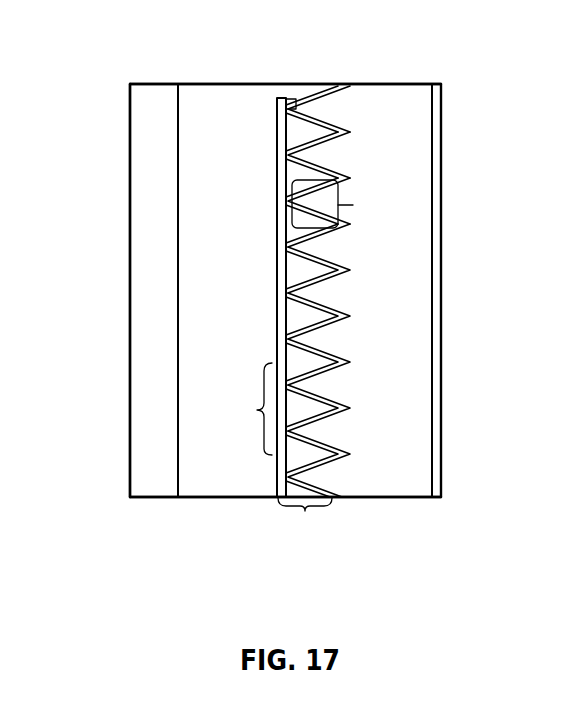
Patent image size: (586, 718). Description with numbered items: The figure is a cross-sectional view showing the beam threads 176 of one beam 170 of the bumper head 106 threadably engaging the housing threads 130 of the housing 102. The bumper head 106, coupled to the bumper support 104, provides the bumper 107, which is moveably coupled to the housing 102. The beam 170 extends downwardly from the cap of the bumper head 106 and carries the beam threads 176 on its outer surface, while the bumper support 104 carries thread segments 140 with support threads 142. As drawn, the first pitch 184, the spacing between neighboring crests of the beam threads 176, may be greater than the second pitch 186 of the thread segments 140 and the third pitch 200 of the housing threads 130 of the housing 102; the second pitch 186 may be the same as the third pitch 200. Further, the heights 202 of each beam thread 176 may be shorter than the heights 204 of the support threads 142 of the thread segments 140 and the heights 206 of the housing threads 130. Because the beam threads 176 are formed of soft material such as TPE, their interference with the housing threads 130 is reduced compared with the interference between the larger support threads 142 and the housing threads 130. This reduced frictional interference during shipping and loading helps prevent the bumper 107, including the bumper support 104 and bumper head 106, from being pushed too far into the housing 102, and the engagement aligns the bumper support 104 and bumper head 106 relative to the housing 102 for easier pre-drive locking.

The housing 102 is at (447, 475).
The bumper support 104 is at (148, 116).
The bumper head 106 is at (237, 486).
The bumper 107 is at (120, 505).
The housing threads 130 is at (322, 105).
The thread segments 140 is at (302, 138).
The support threads 142 is at (290, 225).
The beam 170 is at (200, 108).
The beam threads 176 is at (283, 178).
The first pitch 184 is at (258, 411).
The second pitch 186 is at (342, 200).
The third pitch 200 is at (325, 235).
The heights of each thread 202 is at (270, 178).
The heights of the support threads 204 is at (305, 511).
The heights of the housing threads 206 is at (320, 387).